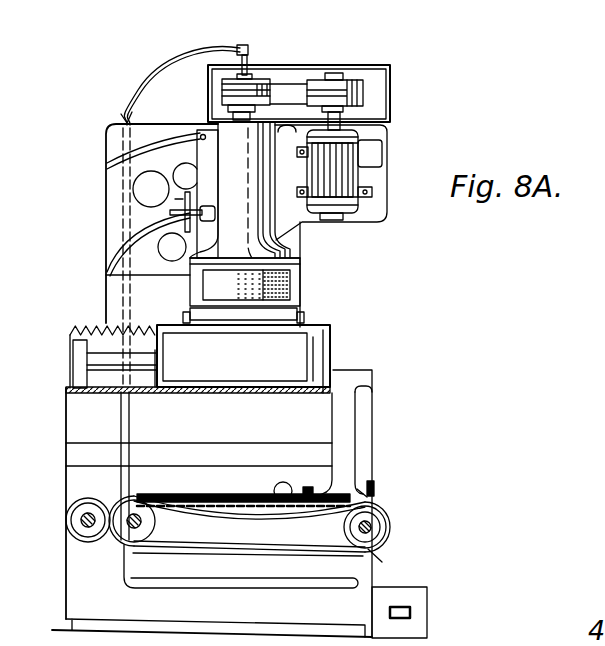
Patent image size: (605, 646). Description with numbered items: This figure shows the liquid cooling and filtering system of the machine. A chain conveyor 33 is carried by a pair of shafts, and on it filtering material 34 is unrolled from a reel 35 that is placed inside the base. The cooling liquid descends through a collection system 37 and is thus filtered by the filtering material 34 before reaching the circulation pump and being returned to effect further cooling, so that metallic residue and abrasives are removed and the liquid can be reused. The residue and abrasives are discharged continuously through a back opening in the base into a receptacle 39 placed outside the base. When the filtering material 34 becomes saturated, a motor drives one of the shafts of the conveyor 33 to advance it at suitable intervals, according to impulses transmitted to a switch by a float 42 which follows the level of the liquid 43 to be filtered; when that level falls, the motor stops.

The chain conveyor 33 is at (220, 494).
The filtering material 34 is at (110, 503).
The reel 35 is at (97, 542).
The collection system 37 is at (347, 432).
The receptacle 39 is at (413, 597).
The float 42 is at (373, 491).
The liquid 43 is at (240, 493).